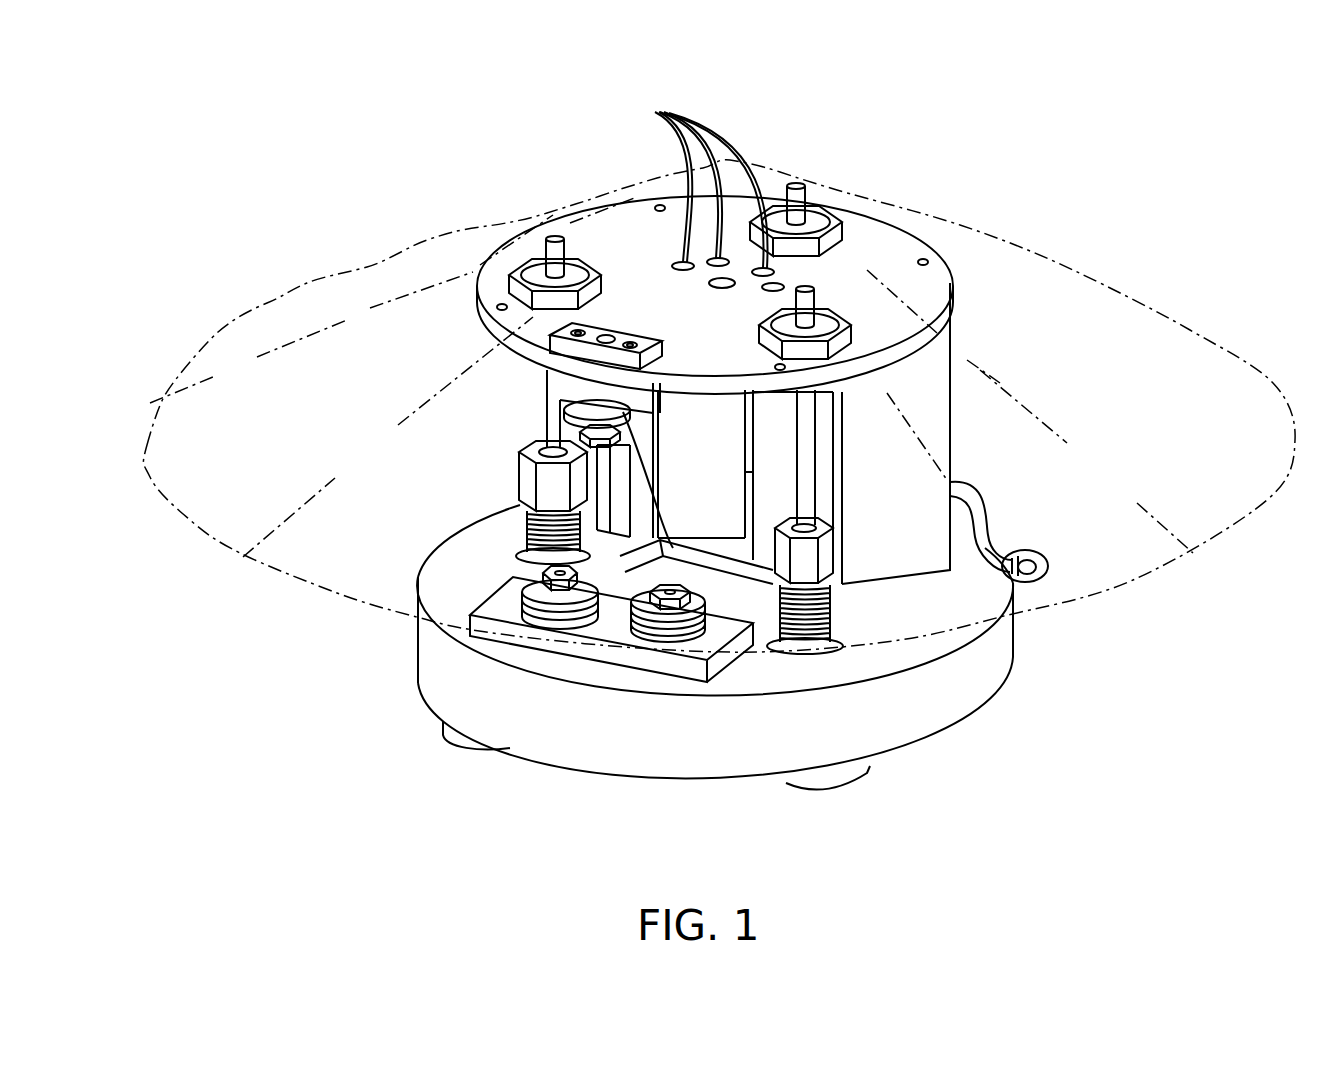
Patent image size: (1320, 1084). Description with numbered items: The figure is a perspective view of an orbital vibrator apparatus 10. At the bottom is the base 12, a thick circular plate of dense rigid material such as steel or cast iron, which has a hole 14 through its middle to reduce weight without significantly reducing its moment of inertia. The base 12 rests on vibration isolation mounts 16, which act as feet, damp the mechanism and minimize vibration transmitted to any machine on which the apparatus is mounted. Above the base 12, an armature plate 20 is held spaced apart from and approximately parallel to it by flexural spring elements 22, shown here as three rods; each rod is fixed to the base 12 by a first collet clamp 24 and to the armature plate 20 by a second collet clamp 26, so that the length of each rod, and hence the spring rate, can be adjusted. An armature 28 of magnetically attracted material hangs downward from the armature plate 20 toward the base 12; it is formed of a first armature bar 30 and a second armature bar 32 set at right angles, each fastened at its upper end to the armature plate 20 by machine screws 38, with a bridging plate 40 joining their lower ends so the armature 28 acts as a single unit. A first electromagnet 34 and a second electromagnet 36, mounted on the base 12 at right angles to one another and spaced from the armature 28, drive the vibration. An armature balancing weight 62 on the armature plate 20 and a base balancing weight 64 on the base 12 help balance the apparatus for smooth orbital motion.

The orbital vibrator apparatus 10 is at (852, 128).
The base 12 is at (1000, 662).
The hole 14 is at (774, 564).
The vibration isolation mounts 16 is at (452, 742).
The armature plate 20 is at (930, 287).
The flexural spring elements 22 is at (550, 425).
The first collet clamp 24 is at (527, 470).
The second collet clamp 26 is at (540, 272).
The armature 28 is at (760, 650).
The first armature bar 30 is at (683, 459).
The second armature bar 32 is at (761, 459).
The first electromagnet 34 is at (548, 420).
The second electromagnet 36 is at (945, 432).
The machine screws 38 is at (693, 193).
The bridging plate 40 is at (665, 548).
The armature balancing weight 62 is at (618, 328).
The base balancing weight 64 is at (652, 667).